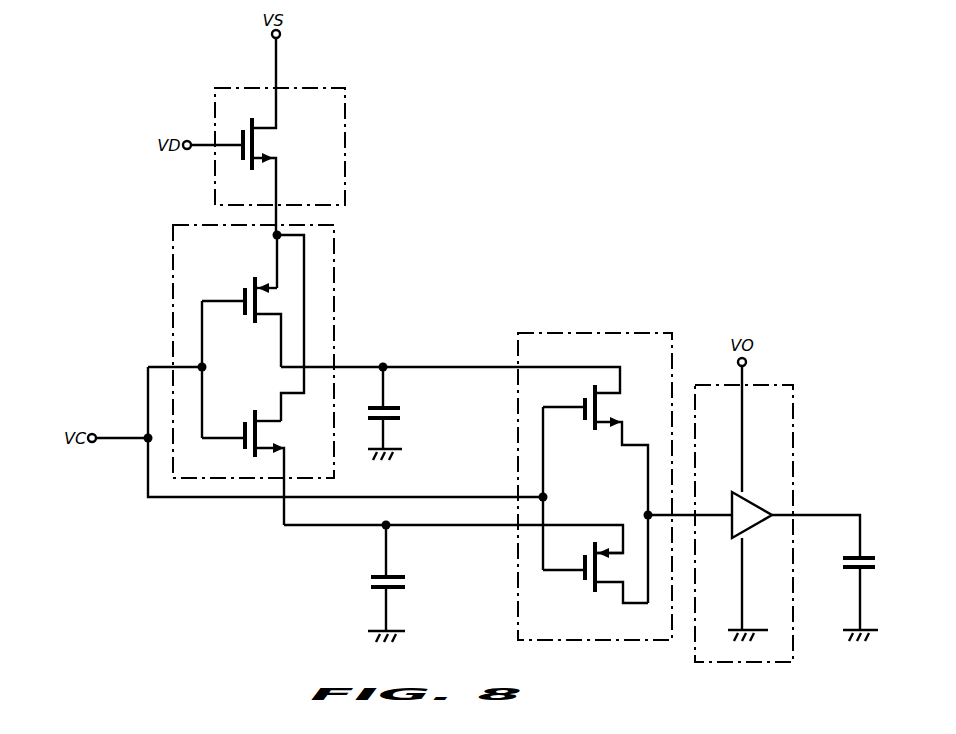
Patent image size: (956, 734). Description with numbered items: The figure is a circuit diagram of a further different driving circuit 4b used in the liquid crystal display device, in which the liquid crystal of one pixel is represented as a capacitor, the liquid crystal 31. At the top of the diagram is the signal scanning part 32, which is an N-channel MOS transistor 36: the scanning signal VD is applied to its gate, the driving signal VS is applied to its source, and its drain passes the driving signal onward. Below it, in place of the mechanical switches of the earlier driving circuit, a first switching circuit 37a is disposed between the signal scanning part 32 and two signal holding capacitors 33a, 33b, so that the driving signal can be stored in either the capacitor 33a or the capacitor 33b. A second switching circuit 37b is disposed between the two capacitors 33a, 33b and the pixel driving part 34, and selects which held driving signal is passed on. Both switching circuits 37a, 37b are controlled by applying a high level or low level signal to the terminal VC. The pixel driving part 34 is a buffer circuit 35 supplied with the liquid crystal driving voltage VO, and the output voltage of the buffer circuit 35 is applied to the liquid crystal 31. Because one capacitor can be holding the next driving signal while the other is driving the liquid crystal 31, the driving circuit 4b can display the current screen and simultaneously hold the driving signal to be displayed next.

The signal scanning part 32 is at (322, 118).
The N-channel MOS transistor 36 is at (258, 148).
The switching circuit 37a is at (324, 253).
The switching circuit 37b is at (606, 343).
The signal holding capacitor 33a is at (402, 576).
The signal holding capacitor 33b is at (395, 405).
The driving circuit 4b is at (290, 544).
The pixel driving part 34 is at (780, 410).
The buffer circuit 35 is at (750, 510).
The liquid crystal 31 is at (849, 556).